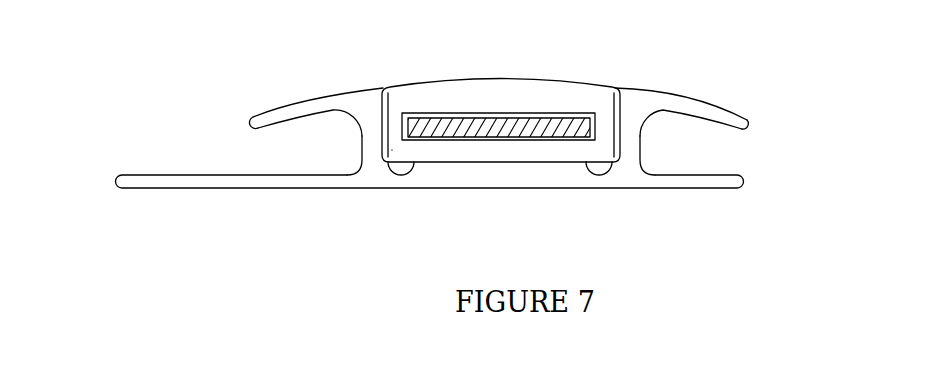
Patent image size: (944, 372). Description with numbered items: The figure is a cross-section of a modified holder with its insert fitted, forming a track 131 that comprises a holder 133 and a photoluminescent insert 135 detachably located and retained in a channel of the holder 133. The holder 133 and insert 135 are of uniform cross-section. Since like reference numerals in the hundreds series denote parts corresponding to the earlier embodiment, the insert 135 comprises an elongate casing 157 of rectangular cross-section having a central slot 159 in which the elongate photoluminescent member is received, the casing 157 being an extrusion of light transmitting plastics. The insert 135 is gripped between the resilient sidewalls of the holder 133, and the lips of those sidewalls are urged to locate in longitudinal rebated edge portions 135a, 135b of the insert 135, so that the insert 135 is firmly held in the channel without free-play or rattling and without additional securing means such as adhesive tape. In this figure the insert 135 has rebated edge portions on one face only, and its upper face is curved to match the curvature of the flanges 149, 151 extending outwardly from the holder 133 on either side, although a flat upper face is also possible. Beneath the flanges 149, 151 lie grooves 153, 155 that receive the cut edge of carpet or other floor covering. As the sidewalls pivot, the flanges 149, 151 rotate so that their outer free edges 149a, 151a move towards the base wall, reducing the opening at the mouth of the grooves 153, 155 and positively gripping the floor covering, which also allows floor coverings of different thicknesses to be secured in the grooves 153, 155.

The track 131 is at (707, 77).
The holder 133 is at (742, 180).
The photoluminescent insert 135 is at (572, 80).
The longitudinal rebated edge portion 135a is at (387, 87).
The longitudinal rebated edge portion 135b is at (610, 87).
The flange 149 is at (292, 108).
The outer free edge 149a is at (250, 123).
The flange 151 is at (727, 105).
The outer free edge 151a is at (750, 125).
The groove 153 is at (292, 153).
The groove 155 is at (678, 155).
The cavity 157 is at (443, 150).
The magnet 159 is at (517, 140).